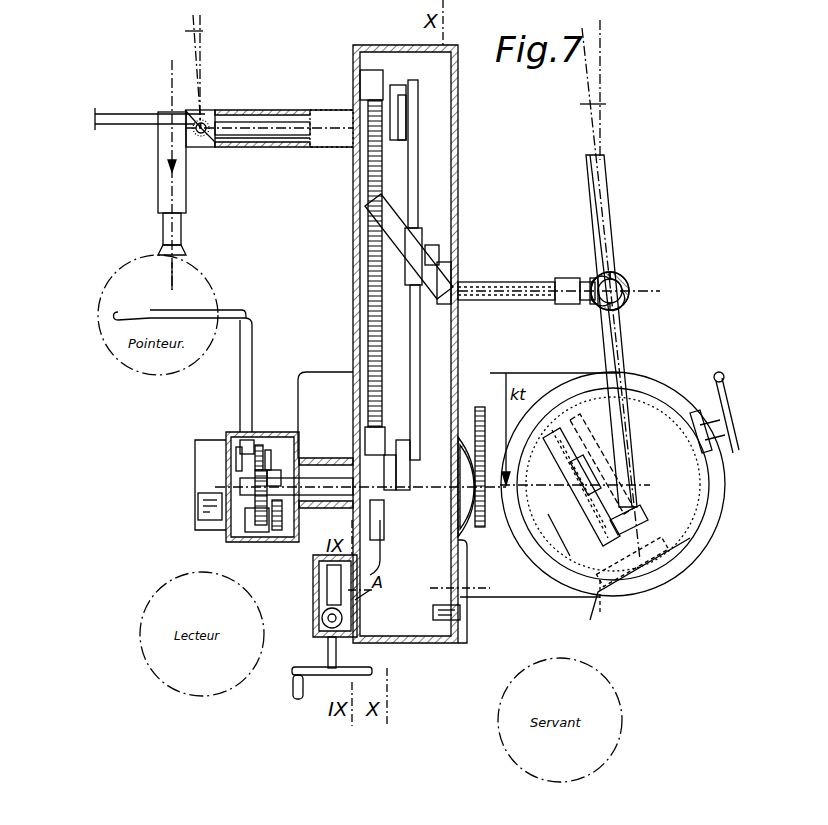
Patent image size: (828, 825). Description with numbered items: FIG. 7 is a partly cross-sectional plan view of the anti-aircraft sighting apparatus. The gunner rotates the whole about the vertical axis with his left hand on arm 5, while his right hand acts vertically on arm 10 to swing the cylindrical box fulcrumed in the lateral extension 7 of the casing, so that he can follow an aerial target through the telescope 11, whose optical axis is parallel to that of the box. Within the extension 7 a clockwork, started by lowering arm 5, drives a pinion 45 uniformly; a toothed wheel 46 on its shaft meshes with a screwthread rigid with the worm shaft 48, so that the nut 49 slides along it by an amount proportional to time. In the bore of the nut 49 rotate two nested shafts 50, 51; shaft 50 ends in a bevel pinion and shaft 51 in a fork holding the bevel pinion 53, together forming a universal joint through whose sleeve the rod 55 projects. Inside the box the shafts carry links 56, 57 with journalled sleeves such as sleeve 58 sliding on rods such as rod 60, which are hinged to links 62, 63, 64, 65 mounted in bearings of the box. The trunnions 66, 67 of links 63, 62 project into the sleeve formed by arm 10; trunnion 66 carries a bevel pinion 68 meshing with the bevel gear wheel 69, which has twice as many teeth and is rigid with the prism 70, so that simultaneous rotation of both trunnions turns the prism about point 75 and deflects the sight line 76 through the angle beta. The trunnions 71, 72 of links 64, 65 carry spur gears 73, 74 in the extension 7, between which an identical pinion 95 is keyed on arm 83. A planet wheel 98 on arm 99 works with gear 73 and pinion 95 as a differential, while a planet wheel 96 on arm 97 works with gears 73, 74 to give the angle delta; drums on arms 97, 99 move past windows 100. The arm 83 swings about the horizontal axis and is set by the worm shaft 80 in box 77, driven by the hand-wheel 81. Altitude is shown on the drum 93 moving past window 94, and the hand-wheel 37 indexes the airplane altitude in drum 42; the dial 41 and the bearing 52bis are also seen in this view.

The arm 5 is at (124, 312).
The lateral extension 7 is at (262, 440).
The arm 10 is at (270, 148).
The telescope 11 is at (165, 200).
The hand-wheel 37 is at (716, 376).
The altitude dial 41 is at (612, 496).
The drum 42 is at (540, 604).
The pinion 45 is at (276, 430).
The toothed wheel 46 is at (384, 520).
The worm shaft 48 is at (366, 160).
The nut 49 is at (370, 198).
The shaft 50 is at (505, 282).
The shaft 51 is at (537, 290).
The arm bearing 52bis is at (592, 276).
The bevel pinion 53 is at (625, 280).
The rod 55 is at (602, 160).
The link 56 is at (452, 275).
The link 57 is at (440, 252).
The journalled sleeve 58 is at (410, 288).
The rod 60 is at (418, 210).
The link 62 is at (396, 140).
The link 63 is at (404, 118).
The link 64 is at (405, 490).
The link 65 is at (410, 470).
The trunnion 66 is at (274, 128).
The trunnion 67 is at (240, 112).
The bevel pinion 68 is at (212, 146).
The bevel gear wheel 69 is at (203, 138).
The prism 70 is at (195, 126).
The trunnion 71 is at (312, 476).
The trunnion 72 is at (326, 462).
The spur gear 73 is at (268, 480).
The spur gear 74 is at (256, 472).
The point 75 is at (200, 128).
The sight line 76 is at (193, 62).
The box 77 is at (326, 570).
The worm shaft 80 is at (328, 628).
The hand-wheel 81 is at (293, 688).
The arm 83 is at (330, 578).
The drum 93 is at (447, 620).
The window 94 is at (460, 607).
The pinion 95 is at (266, 458).
The planet wheel 96 is at (276, 532).
The arm 97 is at (246, 520).
The planet wheel 98 is at (258, 442).
The arm 99 is at (238, 452).
The windows 100 is at (198, 506).